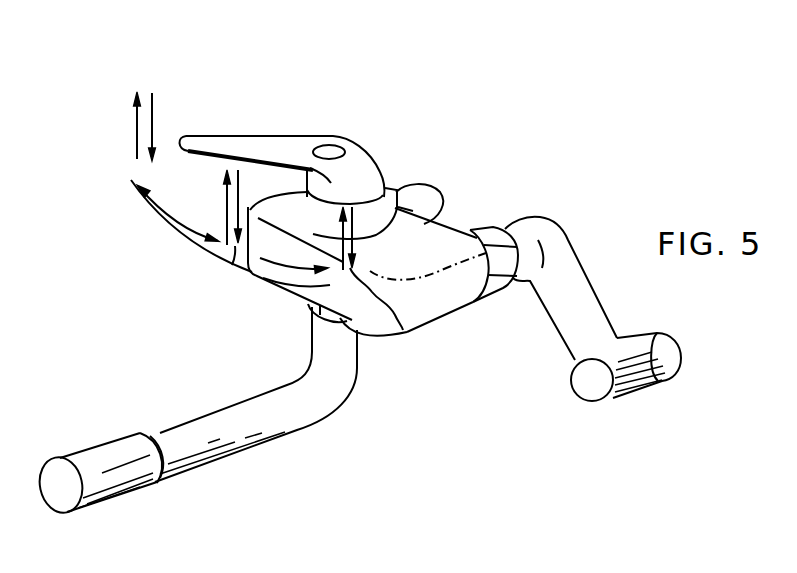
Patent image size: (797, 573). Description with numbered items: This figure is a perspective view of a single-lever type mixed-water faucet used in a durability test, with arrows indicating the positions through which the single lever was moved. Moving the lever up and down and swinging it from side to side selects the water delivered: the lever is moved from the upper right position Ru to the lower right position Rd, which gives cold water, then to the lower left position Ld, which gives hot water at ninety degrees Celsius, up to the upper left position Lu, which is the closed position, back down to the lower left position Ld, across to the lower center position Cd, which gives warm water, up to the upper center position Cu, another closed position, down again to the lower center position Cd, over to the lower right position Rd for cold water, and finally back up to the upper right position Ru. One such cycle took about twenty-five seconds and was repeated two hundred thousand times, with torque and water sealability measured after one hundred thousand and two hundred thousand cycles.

The upper left position Lu is at (138, 100).
The lower left position Ld is at (152, 163).
The upper center position Cu is at (230, 170).
The lower center position Cd is at (233, 265).
The upper right position Ru is at (343, 205).
The lower right position Rd is at (407, 332).